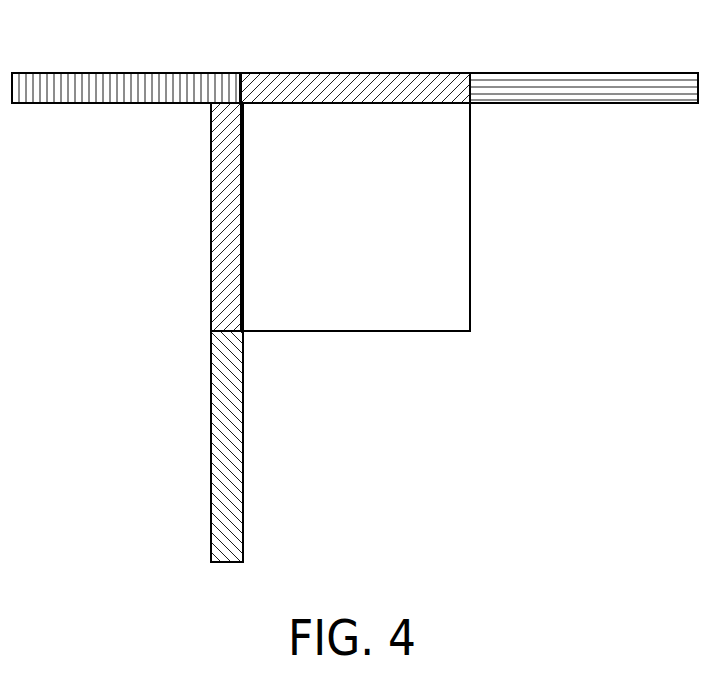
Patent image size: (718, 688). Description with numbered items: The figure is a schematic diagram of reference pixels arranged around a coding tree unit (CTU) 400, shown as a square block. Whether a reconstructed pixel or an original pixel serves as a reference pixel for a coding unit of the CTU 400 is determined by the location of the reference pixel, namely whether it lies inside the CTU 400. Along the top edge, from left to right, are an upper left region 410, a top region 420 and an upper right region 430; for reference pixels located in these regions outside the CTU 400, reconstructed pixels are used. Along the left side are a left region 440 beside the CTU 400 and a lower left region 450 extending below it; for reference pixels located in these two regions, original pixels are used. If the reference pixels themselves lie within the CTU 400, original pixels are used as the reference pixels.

The coding tree unit (CTU) 400 is at (461, 233).
The upper left region 410 is at (130, 80).
The top region 420 is at (363, 80).
The upper right region 430 is at (591, 80).
The left region 440 is at (210, 218).
The lower left region 450 is at (210, 438).